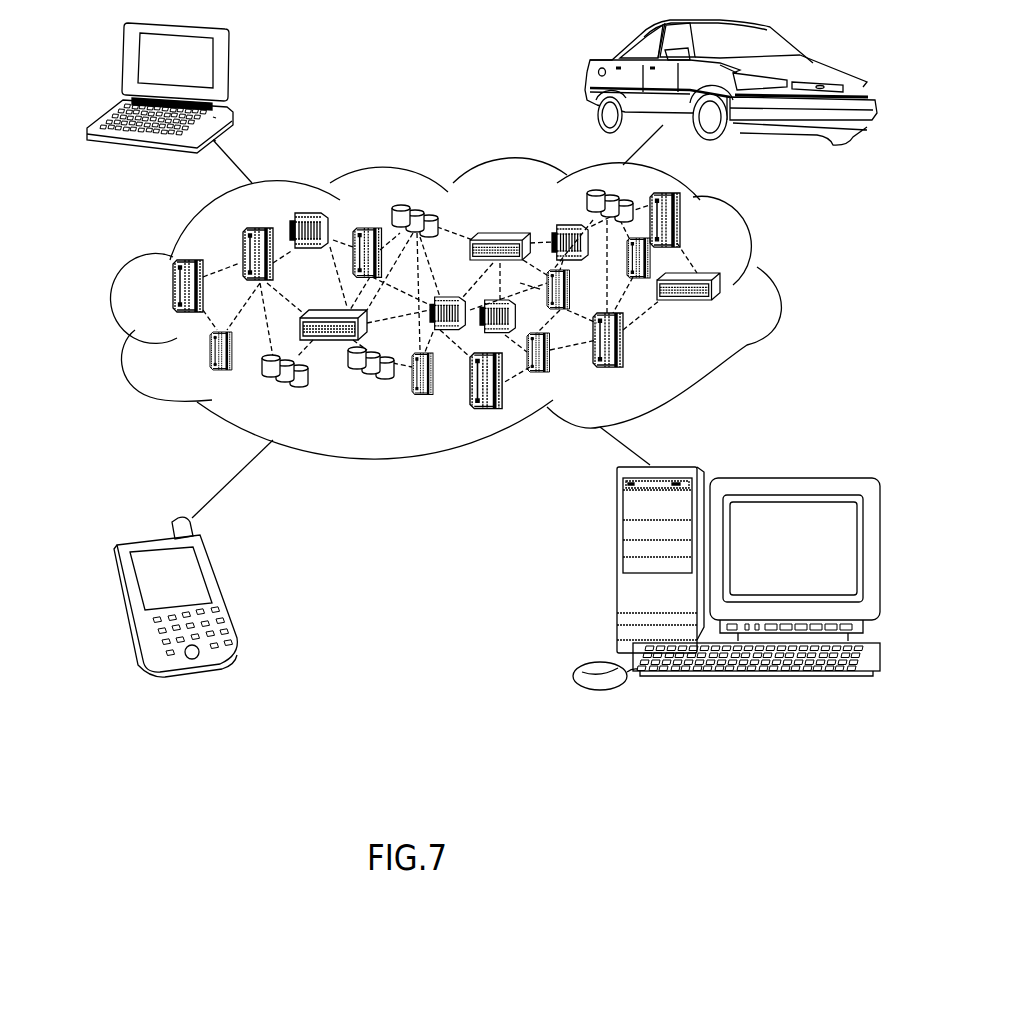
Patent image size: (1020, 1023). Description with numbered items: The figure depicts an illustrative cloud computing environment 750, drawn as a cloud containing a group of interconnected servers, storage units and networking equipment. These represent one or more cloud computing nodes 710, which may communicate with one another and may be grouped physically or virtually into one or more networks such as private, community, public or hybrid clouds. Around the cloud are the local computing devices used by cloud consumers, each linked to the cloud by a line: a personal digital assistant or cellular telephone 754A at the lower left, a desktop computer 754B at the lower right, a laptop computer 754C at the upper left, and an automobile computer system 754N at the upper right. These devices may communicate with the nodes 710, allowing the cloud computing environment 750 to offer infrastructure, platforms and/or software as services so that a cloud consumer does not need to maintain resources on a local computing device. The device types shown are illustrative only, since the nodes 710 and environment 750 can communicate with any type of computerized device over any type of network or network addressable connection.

The cloud computing nodes 710 is at (740, 306).
The cloud computing environment 750 is at (762, 250).
The personal digital assistant (PDA) or cellular telephone 754A is at (222, 588).
The desktop computer 754B is at (617, 570).
The laptop computer 754C is at (230, 68).
The automobile computer system 754N is at (588, 72).